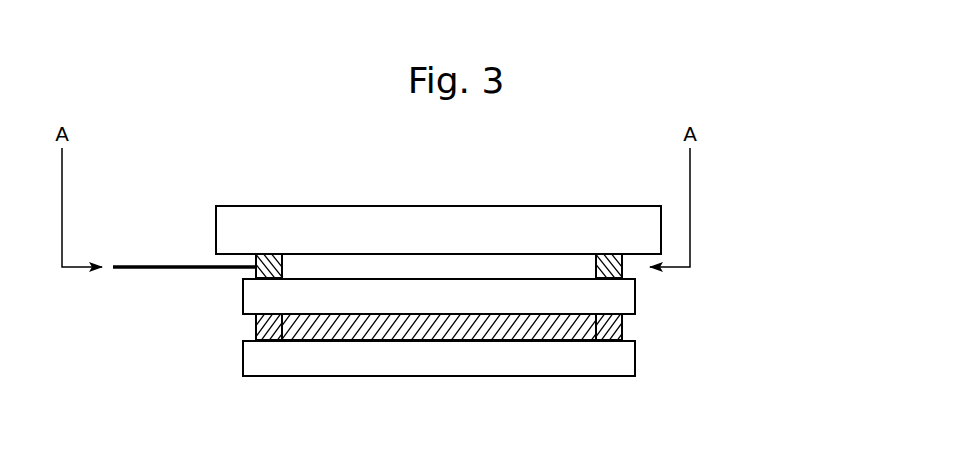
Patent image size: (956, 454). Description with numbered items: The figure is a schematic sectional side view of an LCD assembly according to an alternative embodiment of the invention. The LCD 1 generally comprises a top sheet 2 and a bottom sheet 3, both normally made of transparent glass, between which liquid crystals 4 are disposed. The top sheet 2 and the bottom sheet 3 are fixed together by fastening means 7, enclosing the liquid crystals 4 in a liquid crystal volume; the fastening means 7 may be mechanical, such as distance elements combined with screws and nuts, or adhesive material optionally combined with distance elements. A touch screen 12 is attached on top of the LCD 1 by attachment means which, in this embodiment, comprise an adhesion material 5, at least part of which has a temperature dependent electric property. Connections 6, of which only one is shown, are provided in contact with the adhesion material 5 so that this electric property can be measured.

The LCD 1 is at (712, 358).
The top sheet 2 is at (499, 292).
The bottom sheet 3 is at (382, 353).
The liquid crystals 4 is at (498, 341).
The adhesion material 5 is at (264, 266).
The connections 6 is at (165, 270).
The fastening means 7 is at (265, 332).
The touch screen 12 is at (389, 226).